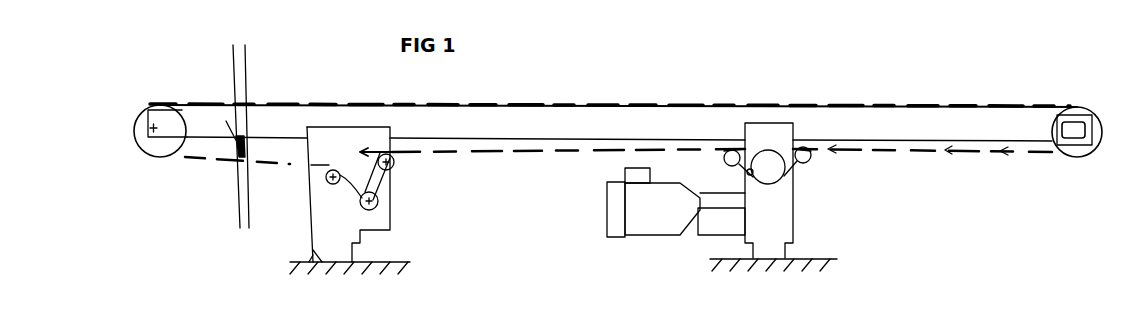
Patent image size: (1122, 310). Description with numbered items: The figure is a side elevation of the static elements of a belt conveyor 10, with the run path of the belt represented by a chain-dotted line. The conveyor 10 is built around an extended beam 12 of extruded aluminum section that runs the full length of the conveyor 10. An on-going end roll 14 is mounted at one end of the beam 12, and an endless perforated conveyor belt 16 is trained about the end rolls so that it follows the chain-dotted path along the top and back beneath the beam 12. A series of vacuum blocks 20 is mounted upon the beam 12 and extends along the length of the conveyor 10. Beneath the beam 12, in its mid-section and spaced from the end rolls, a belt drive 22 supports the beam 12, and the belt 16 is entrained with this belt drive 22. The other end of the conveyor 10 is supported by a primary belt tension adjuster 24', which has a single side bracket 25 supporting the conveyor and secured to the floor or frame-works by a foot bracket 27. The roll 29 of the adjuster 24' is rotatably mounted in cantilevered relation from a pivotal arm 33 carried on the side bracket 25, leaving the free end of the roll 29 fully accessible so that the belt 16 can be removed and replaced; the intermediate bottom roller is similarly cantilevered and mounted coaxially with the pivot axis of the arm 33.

The conveyor 10 is at (605, 103).
The extended beam 12 is at (610, 124).
The on-going end roll 14 is at (1082, 153).
The endless perforated conveyor belt 16 is at (527, 153).
The vacuum blocks 20 is at (910, 108).
The belt drive 22 is at (843, 240).
The primary belt tension adjuster 24' is at (392, 266).
The side bracket 25 is at (362, 194).
The foot bracket 27 is at (337, 260).
The roll 29 is at (410, 170).
The pivotal arm 33 is at (386, 177).